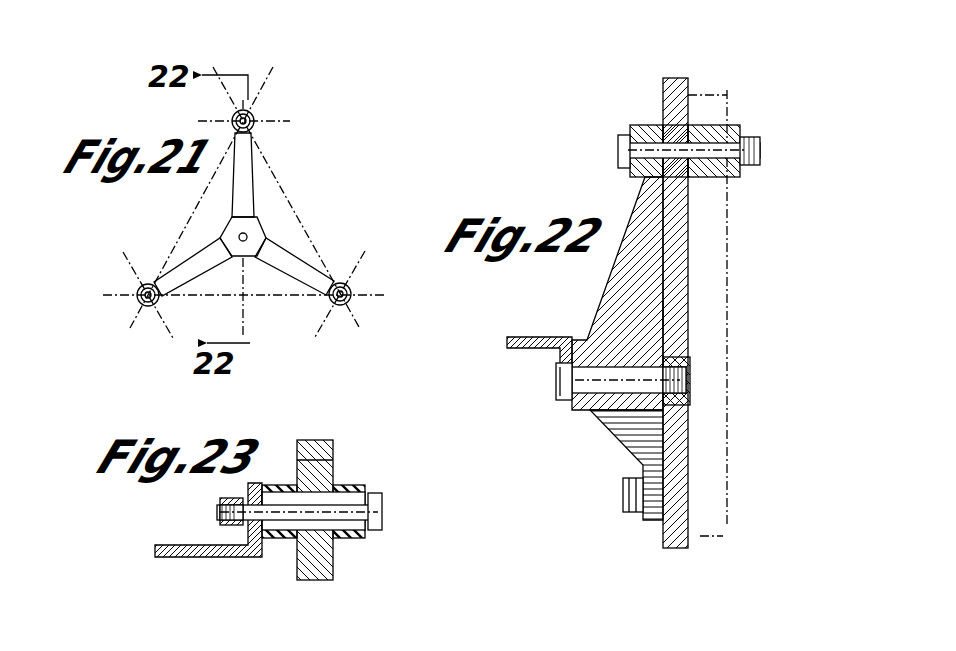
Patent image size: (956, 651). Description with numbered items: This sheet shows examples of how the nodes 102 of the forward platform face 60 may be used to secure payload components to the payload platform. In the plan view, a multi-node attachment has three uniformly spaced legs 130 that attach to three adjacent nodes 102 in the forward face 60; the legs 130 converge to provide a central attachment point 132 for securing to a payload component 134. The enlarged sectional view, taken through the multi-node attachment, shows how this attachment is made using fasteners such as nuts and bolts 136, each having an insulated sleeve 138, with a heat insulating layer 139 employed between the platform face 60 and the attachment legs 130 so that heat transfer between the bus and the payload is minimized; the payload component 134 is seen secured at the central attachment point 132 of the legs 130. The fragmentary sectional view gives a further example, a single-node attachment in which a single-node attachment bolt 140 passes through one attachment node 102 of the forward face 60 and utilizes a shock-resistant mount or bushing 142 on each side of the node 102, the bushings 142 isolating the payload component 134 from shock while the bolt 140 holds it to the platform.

In FIG. 22, the forward platform face 60 is at (727, 252).
In FIG. 23, the forward platform face 60 is at (338, 562).
In FIG. 23, the node 102 is at (343, 457).
In FIG. 21, the leg 130 is at (247, 164).
In FIG. 21, the central attachment point 132 is at (265, 217).
In FIG. 22, the payload component 134 is at (572, 302).
In FIG. 23, the payload component 134 is at (170, 558).
In FIG. 21, the nuts and bolts 136 is at (255, 113).
In FIG. 22, the nuts and bolts 136 is at (713, 150).
In FIG. 22, the insulated sleeve 138 is at (700, 127).
In FIG. 22, the heat insulating layer 139 is at (687, 315).
In FIG. 23, the single-node attachment bolt 140 is at (360, 510).
In FIG. 23, the shock-resistant mount or bushing 142 is at (337, 490).